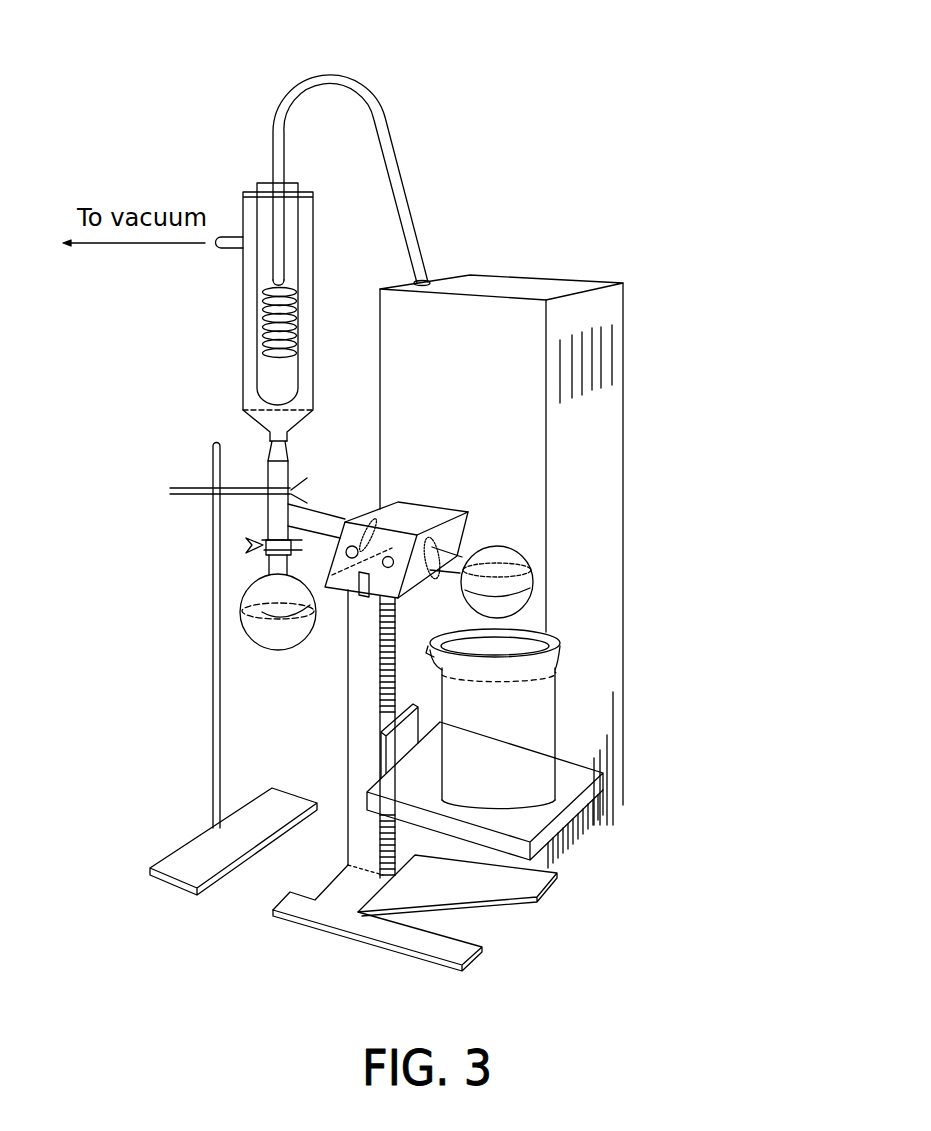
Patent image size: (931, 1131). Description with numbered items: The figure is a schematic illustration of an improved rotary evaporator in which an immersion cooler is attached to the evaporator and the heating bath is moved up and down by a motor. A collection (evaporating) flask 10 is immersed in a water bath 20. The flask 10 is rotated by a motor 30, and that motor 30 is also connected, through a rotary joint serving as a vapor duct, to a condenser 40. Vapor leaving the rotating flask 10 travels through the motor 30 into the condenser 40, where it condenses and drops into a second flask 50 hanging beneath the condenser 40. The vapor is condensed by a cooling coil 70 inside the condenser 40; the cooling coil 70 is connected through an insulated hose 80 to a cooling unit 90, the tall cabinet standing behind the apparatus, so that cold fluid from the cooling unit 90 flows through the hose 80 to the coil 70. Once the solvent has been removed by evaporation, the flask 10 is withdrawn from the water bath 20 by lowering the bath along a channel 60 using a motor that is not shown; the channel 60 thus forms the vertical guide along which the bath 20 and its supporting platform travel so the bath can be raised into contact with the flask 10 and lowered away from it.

The collection flask 10 is at (532, 592).
The water bath 20 is at (532, 710).
The motor 30 is at (418, 518).
The condenser 40 is at (207, 322).
The second flask 50 is at (255, 632).
The channel 60 is at (363, 737).
The cooling coil 70 is at (264, 322).
The insulated hose 80 is at (297, 87).
The cooling unit 90 is at (656, 265).